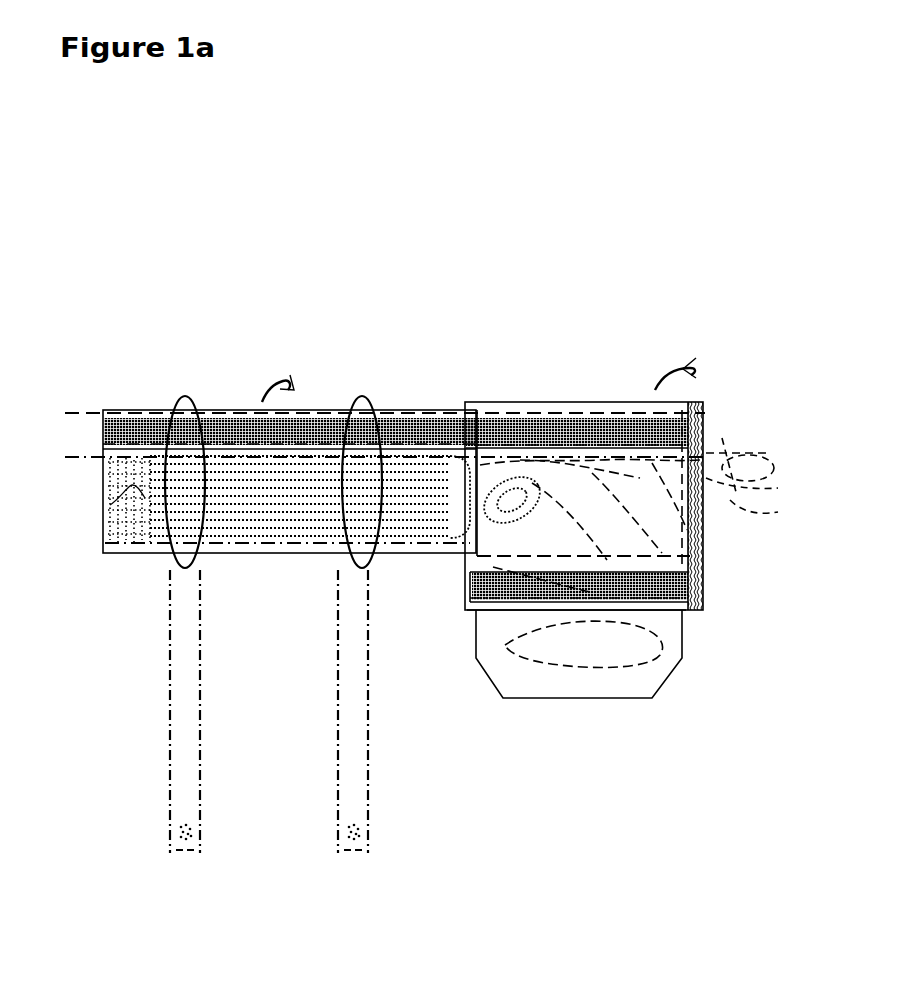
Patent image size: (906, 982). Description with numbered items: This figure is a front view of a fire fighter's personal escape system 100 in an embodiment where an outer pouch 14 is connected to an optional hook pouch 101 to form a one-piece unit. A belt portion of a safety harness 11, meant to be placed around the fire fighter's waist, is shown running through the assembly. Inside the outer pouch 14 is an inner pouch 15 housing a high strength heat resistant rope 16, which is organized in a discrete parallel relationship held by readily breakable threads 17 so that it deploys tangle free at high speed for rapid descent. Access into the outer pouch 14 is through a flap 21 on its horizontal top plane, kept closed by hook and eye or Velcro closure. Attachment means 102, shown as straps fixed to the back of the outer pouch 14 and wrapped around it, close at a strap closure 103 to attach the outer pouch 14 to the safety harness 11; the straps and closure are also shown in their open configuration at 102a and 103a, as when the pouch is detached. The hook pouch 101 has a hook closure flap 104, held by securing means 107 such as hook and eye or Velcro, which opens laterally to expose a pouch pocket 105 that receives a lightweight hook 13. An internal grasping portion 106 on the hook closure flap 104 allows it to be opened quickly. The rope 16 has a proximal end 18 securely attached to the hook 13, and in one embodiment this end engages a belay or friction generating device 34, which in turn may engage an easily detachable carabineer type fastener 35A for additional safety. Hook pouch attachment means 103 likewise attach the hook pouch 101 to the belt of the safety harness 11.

The fire fighter's personal escape system 100 is at (318, 157).
The safety harness 11 is at (70, 413).
The hook 13 is at (614, 660).
The outer pouch 14 is at (119, 556).
The inner pouch 15 is at (448, 545).
The high strength heat resistant rope 16 is at (428, 473).
The readily breakable threads 17 is at (120, 502).
The proximal end 18 is at (478, 455).
The flap 21 is at (315, 415).
The belay or friction generating device 34 is at (642, 478).
The carabineer type fastener 35A is at (555, 468).
The hook pouch 101 is at (567, 398).
The attachment means 102 is at (185, 400).
The attachment means in open configuration 102a is at (180, 776).
The strap closure 103 is at (112, 470).
The strap closure in open configuration 103a is at (180, 830).
The hook closure flap 104 is at (682, 610).
The pouch pocket 105 is at (563, 680).
The internal grasping portion 106 is at (700, 600).
The securing means 107 is at (466, 610).